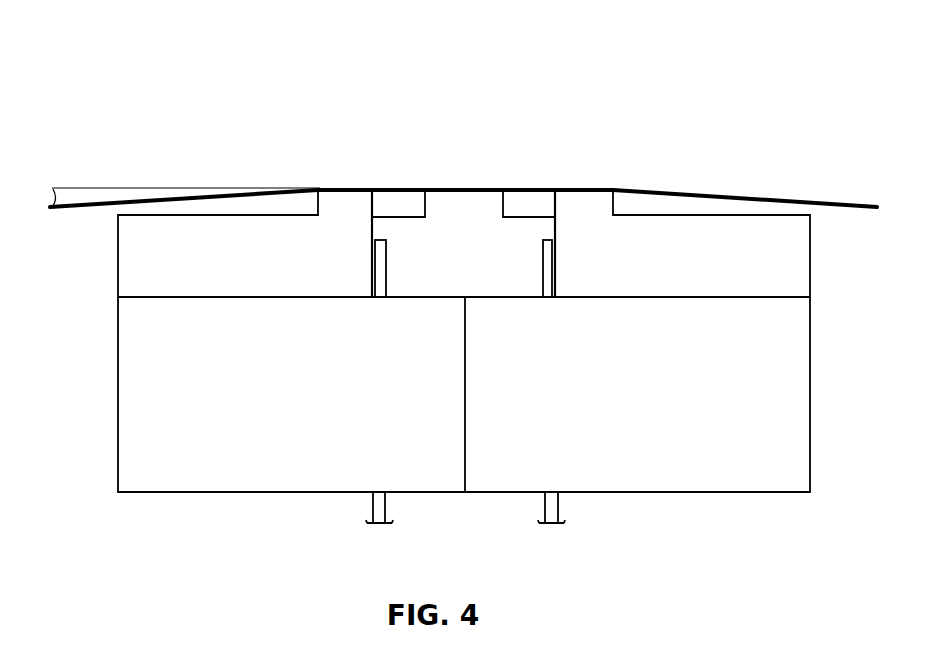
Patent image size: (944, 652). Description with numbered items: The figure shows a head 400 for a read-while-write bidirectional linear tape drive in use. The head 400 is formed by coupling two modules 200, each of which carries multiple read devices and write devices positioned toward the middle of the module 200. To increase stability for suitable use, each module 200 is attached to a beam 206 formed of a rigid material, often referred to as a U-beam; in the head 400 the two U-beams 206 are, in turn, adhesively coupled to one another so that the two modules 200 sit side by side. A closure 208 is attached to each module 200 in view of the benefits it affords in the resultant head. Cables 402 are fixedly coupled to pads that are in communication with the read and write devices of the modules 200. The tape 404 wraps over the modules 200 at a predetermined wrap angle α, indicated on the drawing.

The head 400 is at (229, 149).
The tape 404 is at (757, 197).
The closure 208 is at (427, 199).
The module 200 is at (118, 265).
The beam 206 is at (118, 370).
The cables 402 is at (387, 253).